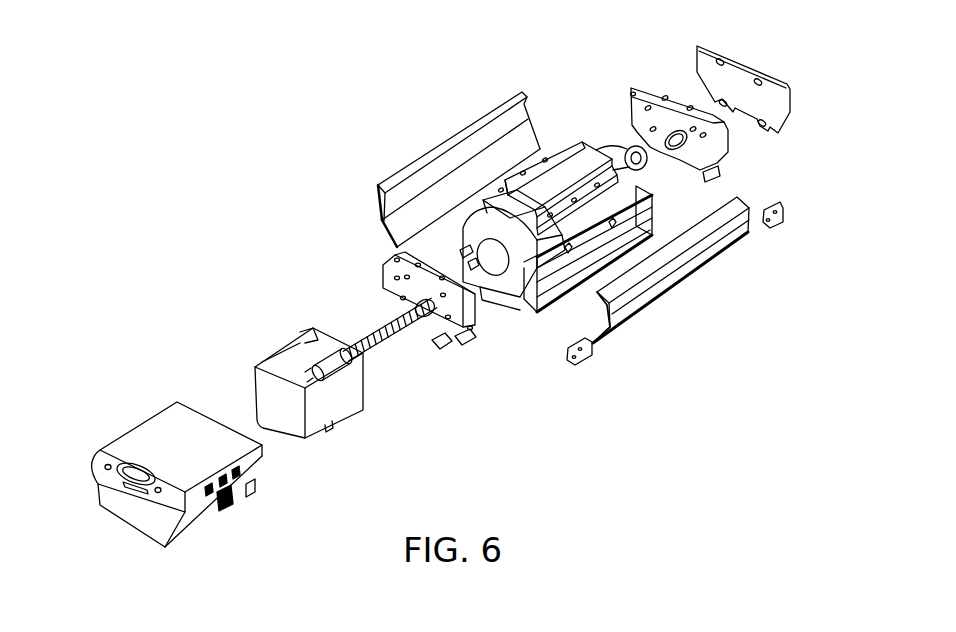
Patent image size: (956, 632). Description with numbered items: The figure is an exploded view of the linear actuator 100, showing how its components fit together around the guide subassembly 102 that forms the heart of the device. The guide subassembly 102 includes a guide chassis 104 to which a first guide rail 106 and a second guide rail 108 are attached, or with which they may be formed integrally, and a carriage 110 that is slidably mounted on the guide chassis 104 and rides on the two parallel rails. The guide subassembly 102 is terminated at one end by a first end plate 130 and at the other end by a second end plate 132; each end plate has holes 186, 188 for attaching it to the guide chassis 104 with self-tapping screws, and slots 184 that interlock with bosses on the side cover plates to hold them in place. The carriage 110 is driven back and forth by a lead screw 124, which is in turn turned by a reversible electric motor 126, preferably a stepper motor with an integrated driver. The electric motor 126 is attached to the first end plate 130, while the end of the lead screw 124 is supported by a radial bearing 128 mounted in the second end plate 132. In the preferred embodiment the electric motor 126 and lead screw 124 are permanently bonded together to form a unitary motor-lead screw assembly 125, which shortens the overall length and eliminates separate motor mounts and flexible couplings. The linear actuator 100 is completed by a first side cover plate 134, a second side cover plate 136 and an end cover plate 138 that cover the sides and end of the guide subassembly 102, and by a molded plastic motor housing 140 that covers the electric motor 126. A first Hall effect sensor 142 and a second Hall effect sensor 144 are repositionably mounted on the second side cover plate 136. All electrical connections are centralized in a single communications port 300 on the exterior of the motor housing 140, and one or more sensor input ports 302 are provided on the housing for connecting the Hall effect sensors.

The linear actuator 100 is at (302, 197).
The guide subassembly 102 is at (592, 130).
The guide chassis 104 is at (507, 227).
The first guide rail 106 is at (462, 256).
The second guide rail 108 is at (540, 307).
The carriage 110 is at (555, 157).
The lead screw 124 is at (385, 350).
The motor-lead screw assembly 125 is at (372, 393).
The electric motor 126 is at (287, 362).
The radial bearing 128 is at (655, 161).
The first end plate 130 is at (387, 278).
The second end plate 132 is at (722, 148).
The first side cover plate 134 is at (410, 167).
The second side cover plate 136 is at (673, 267).
The end cover plate 138 is at (745, 72).
The motor housing 140 is at (163, 428).
The first Hall effect sensor 142 is at (582, 365).
The second Hall effect sensor 144 is at (783, 220).
The slots 184 is at (717, 178).
The holes 186 is at (397, 258).
The holes 188 is at (405, 300).
The communications port 300 is at (136, 478).
The sensor input ports 302 is at (228, 502).